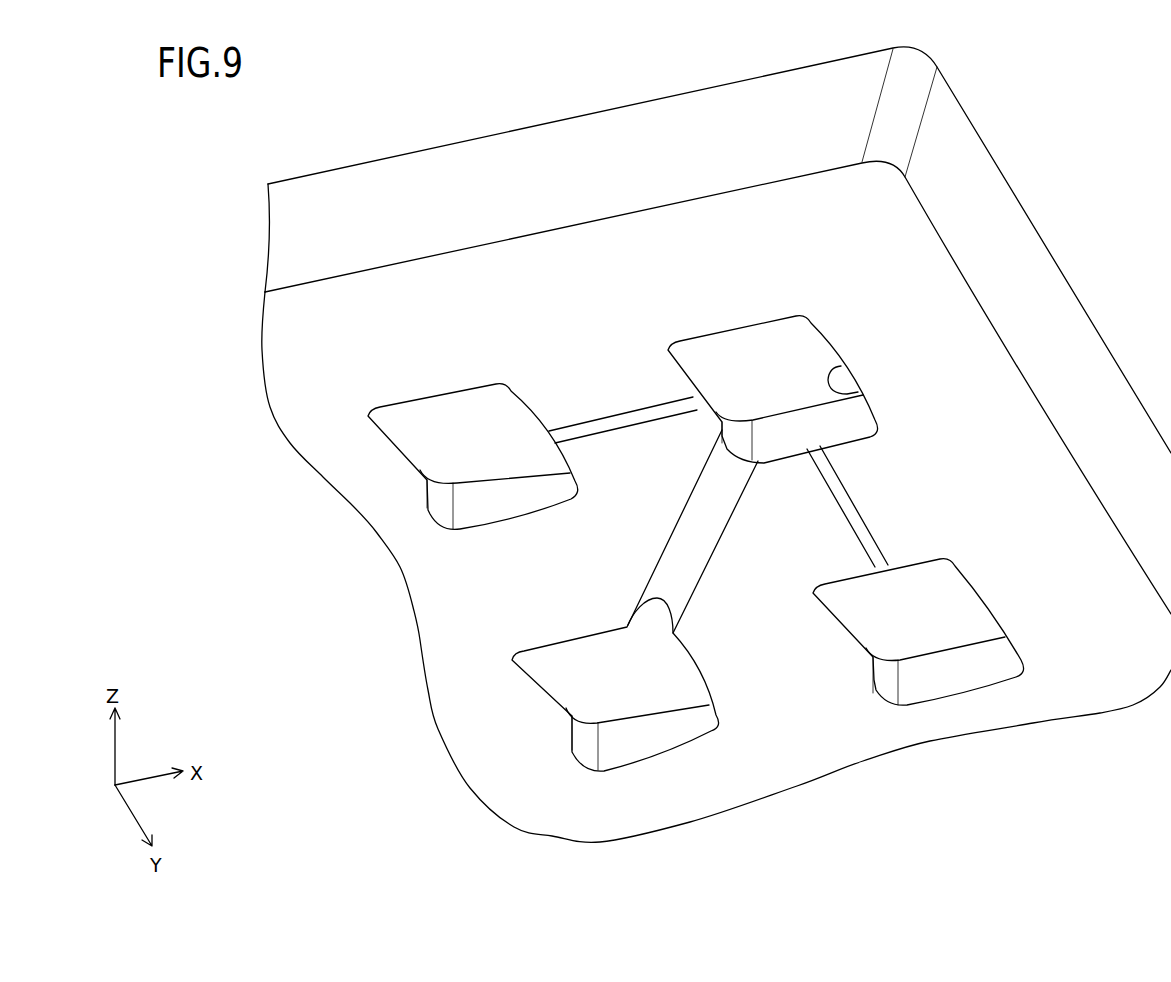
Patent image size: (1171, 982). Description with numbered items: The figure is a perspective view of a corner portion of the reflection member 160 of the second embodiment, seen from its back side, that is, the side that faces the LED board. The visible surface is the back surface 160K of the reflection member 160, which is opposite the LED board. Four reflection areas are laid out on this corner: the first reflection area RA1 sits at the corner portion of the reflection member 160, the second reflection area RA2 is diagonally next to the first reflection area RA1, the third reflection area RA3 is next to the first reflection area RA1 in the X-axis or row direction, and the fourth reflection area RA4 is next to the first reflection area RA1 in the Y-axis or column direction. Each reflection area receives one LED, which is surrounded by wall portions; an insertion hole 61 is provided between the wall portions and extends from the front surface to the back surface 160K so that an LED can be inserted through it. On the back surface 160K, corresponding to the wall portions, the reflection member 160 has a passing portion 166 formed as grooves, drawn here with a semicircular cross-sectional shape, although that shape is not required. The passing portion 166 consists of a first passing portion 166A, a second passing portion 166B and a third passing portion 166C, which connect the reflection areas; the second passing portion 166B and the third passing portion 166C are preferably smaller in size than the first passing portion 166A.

The reflection member 160 is at (1138, 31).
The back surface 160K is at (622, 373).
The first reflection area RA1 is at (795, 354).
The second reflection area RA2 is at (633, 672).
The third reflection area RA3 is at (450, 450).
The fourth reflection area RA4 is at (943, 632).
The insertion hole 61 is at (858, 392).
The passing portion 166 is at (705, 661).
The first passing portion 166A is at (683, 578).
The second passing portion 166B is at (608, 424).
The third passing portion 166C is at (852, 518).